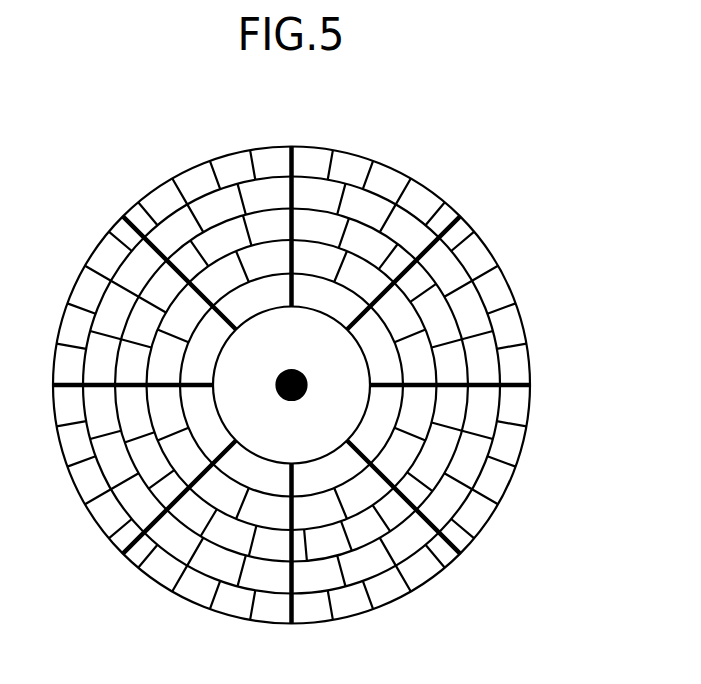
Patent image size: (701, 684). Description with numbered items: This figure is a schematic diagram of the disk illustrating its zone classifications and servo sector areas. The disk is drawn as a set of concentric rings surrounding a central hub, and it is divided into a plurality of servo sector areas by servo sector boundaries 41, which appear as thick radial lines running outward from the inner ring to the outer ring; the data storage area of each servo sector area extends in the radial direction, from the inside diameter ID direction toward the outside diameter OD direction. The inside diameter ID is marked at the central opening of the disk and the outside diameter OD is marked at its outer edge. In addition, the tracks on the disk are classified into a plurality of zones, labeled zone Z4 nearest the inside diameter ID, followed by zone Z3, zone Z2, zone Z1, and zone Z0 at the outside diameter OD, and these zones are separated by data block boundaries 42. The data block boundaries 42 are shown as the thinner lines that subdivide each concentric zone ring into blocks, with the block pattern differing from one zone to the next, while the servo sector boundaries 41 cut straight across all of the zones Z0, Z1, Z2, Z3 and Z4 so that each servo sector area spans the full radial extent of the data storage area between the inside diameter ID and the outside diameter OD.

The servo sector boundaries 41 is at (98, 392).
The data block boundaries 42 is at (347, 200).
The inside diameter ID is at (291, 385).
The outside diameter OD is at (294, 385).
The zone Z0 is at (512, 385).
The zone Z1 is at (291, 385).
The zone Z2 is at (291, 385).
The zone Z3 is at (292, 385).
The zone Z4 is at (291, 385).